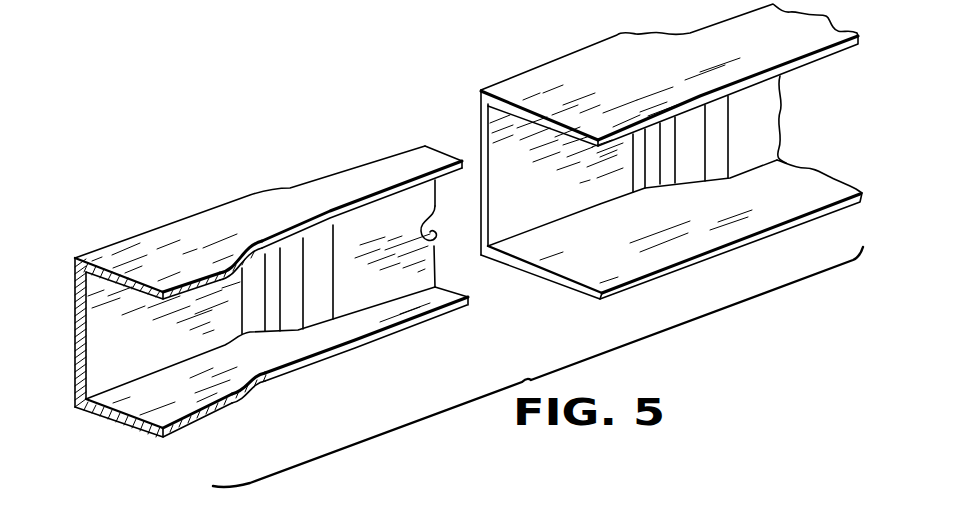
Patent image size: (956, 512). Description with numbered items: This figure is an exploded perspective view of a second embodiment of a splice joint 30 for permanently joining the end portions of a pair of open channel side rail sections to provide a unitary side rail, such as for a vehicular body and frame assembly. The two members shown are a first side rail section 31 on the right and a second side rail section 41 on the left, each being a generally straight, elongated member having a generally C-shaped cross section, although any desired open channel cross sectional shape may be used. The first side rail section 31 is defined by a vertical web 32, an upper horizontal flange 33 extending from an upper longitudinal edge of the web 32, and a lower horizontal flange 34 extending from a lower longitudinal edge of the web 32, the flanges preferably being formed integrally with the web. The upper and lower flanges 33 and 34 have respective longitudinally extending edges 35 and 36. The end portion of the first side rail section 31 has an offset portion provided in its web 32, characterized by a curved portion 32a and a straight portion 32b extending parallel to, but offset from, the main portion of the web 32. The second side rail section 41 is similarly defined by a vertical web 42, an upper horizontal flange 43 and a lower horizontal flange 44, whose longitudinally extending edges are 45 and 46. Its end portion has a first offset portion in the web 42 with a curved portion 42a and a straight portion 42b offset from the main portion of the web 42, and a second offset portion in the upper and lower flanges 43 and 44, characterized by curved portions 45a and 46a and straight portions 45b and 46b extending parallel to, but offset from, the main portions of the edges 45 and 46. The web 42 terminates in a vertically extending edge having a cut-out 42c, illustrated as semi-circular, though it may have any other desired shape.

The splice joint 30 is at (457, 434).
The first side rail section 31 is at (523, 46).
The web 32 is at (766, 117).
The curved portion 32a is at (665, 153).
The straight portion 32b is at (510, 192).
The upper horizontal flange 33 is at (585, 97).
The lower horizontal flange 34 is at (589, 257).
The longitudinally extending edge 35 is at (810, 60).
The longitudinally extending edge 36 is at (793, 222).
The second side rail section 41 is at (206, 132).
The web 42 is at (108, 349).
The curved portion 42a is at (288, 280).
The straight portion 42b is at (392, 243).
The cut-out 42c is at (437, 236).
The upper horizontal flange 43 is at (148, 275).
The lower horizontal flange 44 is at (153, 408).
The longitudinally extending edge 45 is at (198, 277).
The curved portion 45a is at (240, 256).
The straight portion 45b is at (372, 203).
The longitudinally extending edge 46 is at (178, 440).
The curved portion 46a is at (235, 398).
The straight portion 46b is at (382, 337).